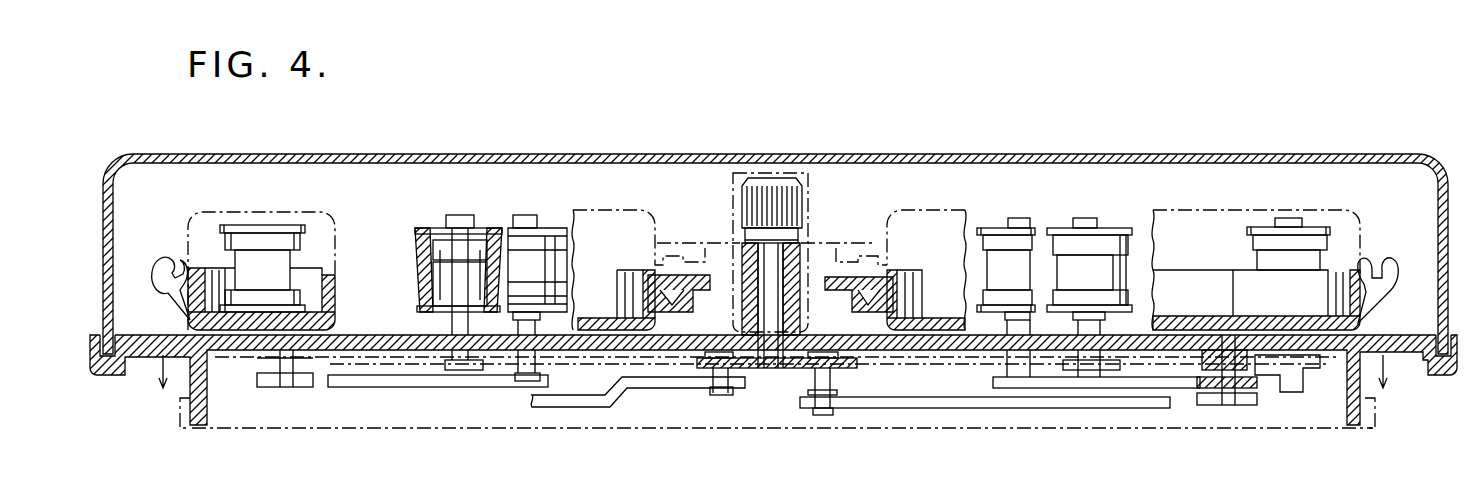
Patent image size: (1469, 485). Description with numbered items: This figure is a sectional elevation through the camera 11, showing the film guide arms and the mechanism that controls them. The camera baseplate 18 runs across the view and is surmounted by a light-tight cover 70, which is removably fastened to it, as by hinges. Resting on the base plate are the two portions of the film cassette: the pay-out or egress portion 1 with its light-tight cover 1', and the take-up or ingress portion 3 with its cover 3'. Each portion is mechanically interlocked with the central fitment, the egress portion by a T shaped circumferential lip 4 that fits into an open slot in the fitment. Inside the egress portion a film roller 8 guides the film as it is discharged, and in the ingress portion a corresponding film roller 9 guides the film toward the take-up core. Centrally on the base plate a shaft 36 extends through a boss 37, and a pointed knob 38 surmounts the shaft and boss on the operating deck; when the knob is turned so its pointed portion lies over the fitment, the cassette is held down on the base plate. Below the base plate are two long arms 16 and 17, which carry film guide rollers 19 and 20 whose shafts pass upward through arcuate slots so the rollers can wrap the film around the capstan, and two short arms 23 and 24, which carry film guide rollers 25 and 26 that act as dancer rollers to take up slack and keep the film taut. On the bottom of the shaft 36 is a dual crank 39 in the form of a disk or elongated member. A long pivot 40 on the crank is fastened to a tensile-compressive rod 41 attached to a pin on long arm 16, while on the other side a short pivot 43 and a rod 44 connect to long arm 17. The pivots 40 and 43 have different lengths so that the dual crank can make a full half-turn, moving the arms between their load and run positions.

The light-tight cover 70 is at (451, 159).
The camera baseplate 18 is at (988, 345).
The camera 11 is at (1425, 393).
The cover of ingress portion 3' is at (242, 260).
The film roller 9 is at (262, 224).
The take-up or ingress portion 3 is at (772, 320).
The short arm 24 is at (264, 367).
The long arm 17 is at (438, 388).
The film guide roller 26 is at (482, 230).
The film guide roller 20 is at (548, 230).
The T shaped circumferential lip 4 is at (685, 298).
The rod 44 is at (630, 390).
The short pivot 43 is at (730, 394).
The long pivot 40 is at (812, 381).
The dual crank 39 is at (850, 366).
The pointed knob 38 is at (803, 190).
The boss 37 is at (801, 313).
The shaft 36 is at (773, 260).
The pay-out or egress portion 1 is at (1142, 271).
The film guide roller 19 is at (985, 228).
The film guide roller 25 is at (1110, 229).
The tensile-compressive stress member or rod 41 is at (934, 399).
The long arm 16 is at (1172, 398).
The short arm 23 is at (1316, 360).
The cover of egress portion 1' is at (1271, 259).
The film roller 8 is at (1303, 228).